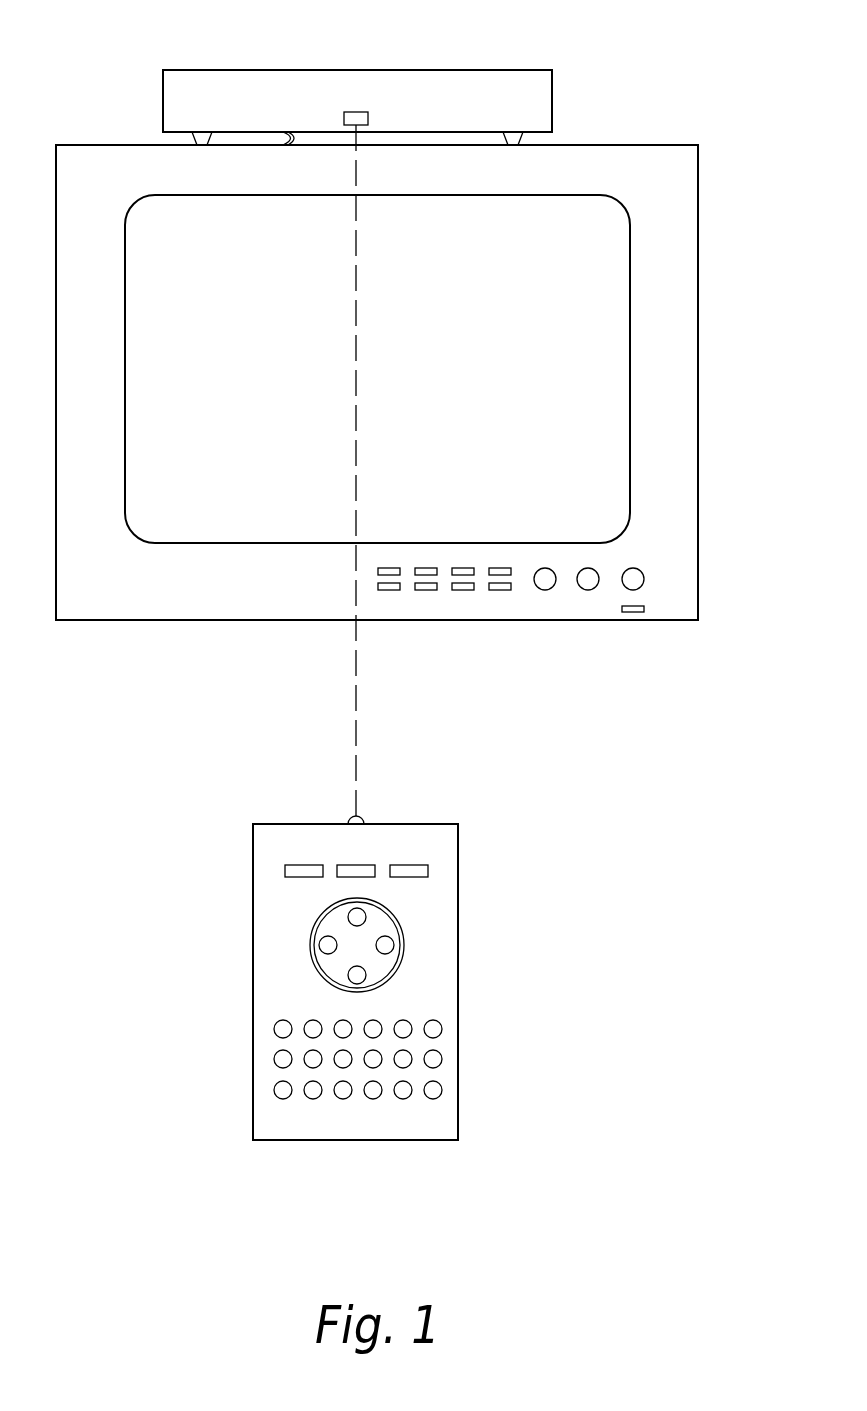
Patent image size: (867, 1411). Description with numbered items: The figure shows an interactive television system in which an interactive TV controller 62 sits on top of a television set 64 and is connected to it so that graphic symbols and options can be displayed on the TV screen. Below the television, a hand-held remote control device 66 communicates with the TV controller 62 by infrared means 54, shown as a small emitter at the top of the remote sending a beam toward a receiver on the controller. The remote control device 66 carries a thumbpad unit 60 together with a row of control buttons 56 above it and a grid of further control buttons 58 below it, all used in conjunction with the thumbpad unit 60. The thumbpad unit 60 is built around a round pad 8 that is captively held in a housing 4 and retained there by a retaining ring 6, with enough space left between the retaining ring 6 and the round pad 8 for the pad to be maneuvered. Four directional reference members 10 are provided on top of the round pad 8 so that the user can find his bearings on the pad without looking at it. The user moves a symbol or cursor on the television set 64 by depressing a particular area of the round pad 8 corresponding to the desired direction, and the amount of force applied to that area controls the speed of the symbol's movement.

The housing 4 is at (258, 855).
The retaining ring 6 is at (310, 960).
The round pad 8 is at (383, 925).
The directional reference members 10 is at (387, 948).
The infrared means 54 is at (365, 822).
The control buttons 56 is at (430, 870).
The control buttons 58 is at (442, 1030).
The thumbpad unit 60 is at (292, 922).
The interactive TV controller 62 is at (552, 82).
The television set 64 is at (698, 215).
The remote control device 66 is at (527, 918).